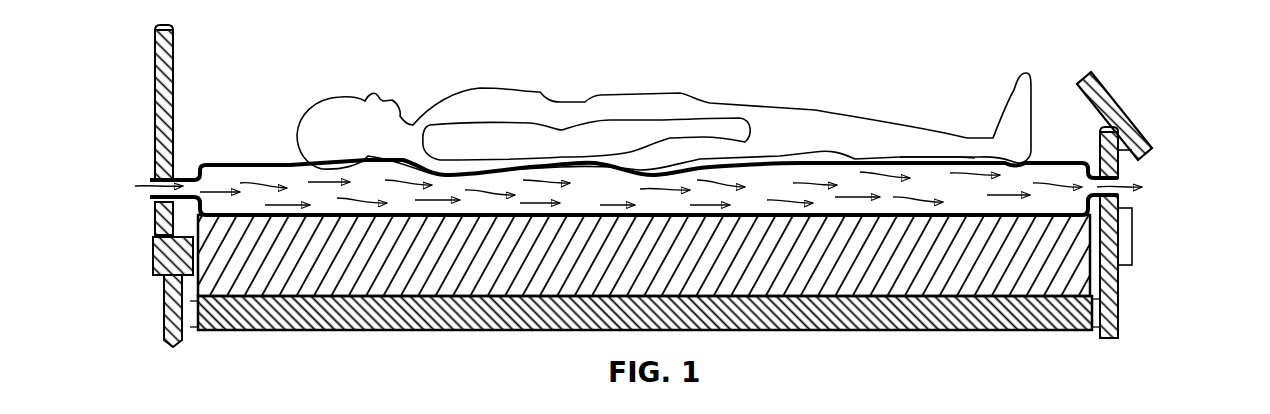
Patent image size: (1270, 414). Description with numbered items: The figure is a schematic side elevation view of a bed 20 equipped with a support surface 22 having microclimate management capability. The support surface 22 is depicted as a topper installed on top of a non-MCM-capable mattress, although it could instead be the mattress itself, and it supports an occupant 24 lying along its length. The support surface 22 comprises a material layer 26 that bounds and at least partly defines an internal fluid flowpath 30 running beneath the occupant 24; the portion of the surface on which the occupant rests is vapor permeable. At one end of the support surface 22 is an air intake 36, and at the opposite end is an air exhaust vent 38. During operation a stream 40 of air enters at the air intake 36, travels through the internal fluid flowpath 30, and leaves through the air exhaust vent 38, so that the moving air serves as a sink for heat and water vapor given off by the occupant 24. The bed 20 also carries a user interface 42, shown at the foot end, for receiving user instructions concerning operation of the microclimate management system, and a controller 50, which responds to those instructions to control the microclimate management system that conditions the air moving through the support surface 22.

The bed 20 is at (1077, 127).
The support surface 22 is at (1035, 163).
The occupant 24 is at (700, 105).
The material layer 26 is at (975, 158).
The internal fluid flowpath 30 is at (611, 194).
The air intake 36 is at (158, 205).
The air exhaust vent 38 is at (1137, 185).
The stream of air 40 is at (287, 206).
The user interface 42 is at (1140, 144).
The controller 50 is at (1125, 240).